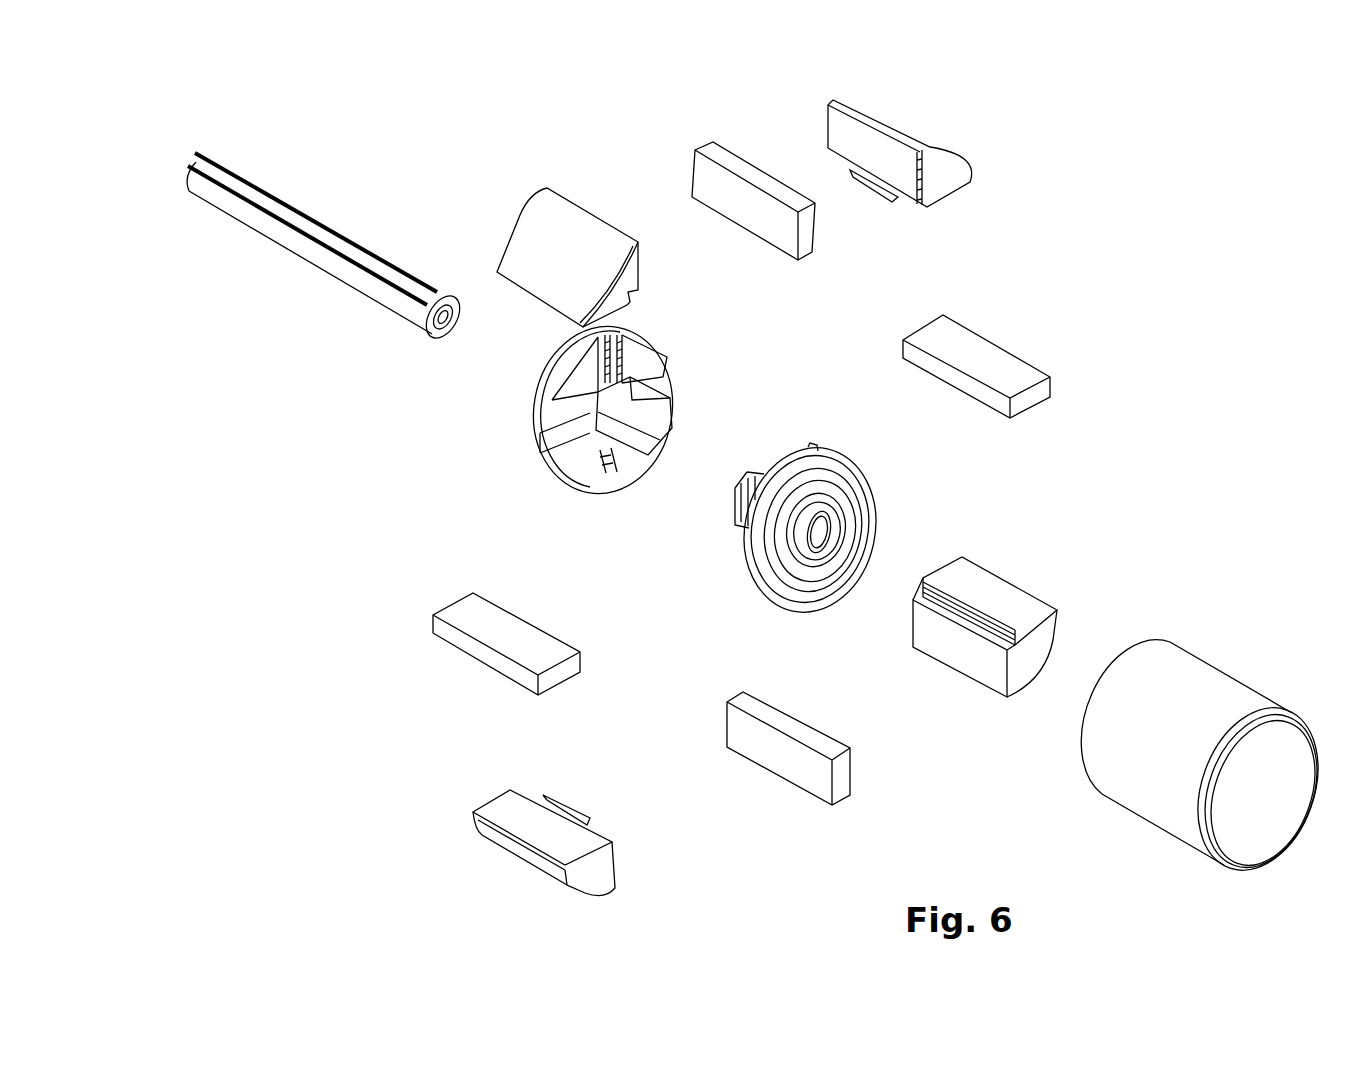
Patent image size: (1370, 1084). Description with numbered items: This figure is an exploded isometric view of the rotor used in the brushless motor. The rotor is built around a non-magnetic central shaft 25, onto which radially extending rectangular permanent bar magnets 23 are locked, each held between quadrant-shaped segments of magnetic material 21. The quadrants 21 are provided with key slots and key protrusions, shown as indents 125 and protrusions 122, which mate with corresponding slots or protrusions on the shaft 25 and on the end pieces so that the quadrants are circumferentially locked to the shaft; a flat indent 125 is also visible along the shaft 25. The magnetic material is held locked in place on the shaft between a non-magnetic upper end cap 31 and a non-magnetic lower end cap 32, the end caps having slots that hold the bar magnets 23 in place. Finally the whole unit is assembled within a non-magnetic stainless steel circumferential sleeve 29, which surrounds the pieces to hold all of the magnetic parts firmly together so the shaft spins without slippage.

The quadrant-shaped magnetic material 21 is at (547, 213).
The permanent bar magnets 23 is at (693, 162).
The central shaft 25 is at (287, 189).
The circumferential sleeve 29 is at (1220, 658).
The end cap 31 is at (748, 593).
The lower end cap 32 is at (533, 427).
The protrusions 122 is at (877, 193).
The indents 125 is at (280, 207).